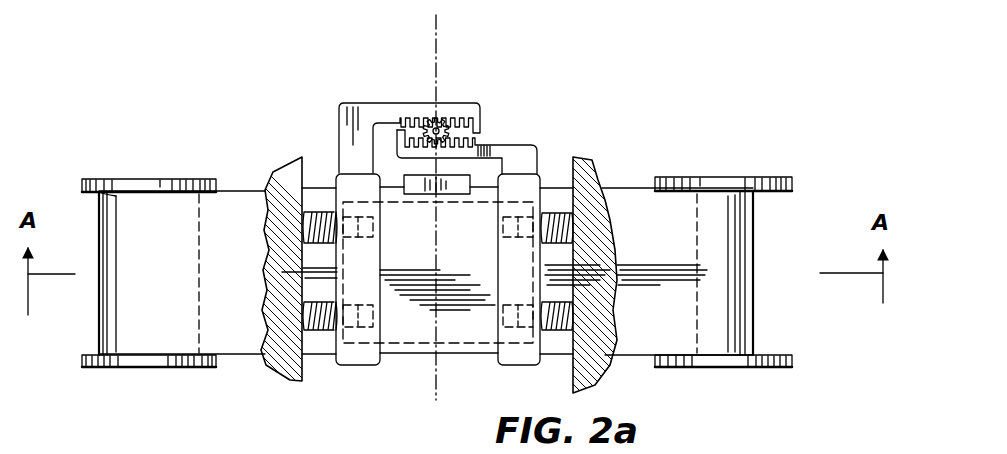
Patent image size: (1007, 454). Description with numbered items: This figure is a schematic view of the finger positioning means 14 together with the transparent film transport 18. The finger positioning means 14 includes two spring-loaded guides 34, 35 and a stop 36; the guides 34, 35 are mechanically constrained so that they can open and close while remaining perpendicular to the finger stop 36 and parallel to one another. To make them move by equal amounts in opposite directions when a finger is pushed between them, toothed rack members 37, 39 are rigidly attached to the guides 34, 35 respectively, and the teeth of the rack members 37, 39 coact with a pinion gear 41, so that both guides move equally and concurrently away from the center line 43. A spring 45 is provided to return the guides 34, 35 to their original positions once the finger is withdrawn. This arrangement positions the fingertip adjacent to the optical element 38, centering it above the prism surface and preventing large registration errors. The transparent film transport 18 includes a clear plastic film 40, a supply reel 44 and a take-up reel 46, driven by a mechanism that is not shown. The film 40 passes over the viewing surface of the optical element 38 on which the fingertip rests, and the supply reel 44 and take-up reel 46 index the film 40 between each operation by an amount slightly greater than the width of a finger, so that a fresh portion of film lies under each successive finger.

The finger positioning means 14 is at (433, 213).
The transparent film transport 18 is at (161, 295).
The spring-loaded guide 34 is at (355, 184).
The spring-loaded guide 35 is at (525, 187).
The stop 36 is at (453, 196).
The toothed rack member 37 is at (380, 108).
The optical element 38 is at (465, 345).
The toothed rack member 39 is at (498, 147).
The clear plastic film 40 is at (242, 197).
The pinion gear 41 is at (446, 128).
The center line 43 is at (436, 390).
The supply reel 44 is at (98, 180).
The spring 45 is at (322, 212).
The take-up reel 46 is at (777, 177).